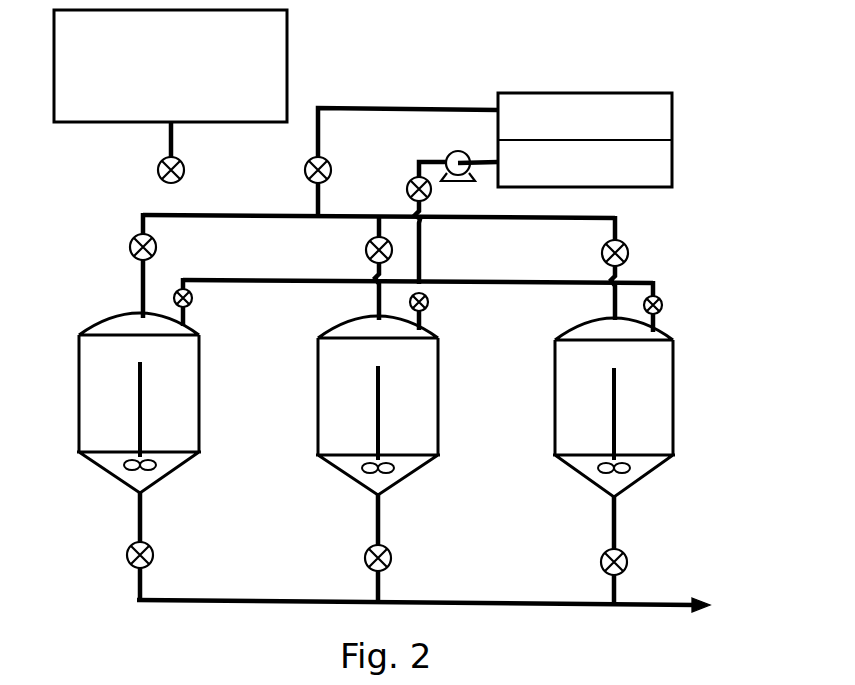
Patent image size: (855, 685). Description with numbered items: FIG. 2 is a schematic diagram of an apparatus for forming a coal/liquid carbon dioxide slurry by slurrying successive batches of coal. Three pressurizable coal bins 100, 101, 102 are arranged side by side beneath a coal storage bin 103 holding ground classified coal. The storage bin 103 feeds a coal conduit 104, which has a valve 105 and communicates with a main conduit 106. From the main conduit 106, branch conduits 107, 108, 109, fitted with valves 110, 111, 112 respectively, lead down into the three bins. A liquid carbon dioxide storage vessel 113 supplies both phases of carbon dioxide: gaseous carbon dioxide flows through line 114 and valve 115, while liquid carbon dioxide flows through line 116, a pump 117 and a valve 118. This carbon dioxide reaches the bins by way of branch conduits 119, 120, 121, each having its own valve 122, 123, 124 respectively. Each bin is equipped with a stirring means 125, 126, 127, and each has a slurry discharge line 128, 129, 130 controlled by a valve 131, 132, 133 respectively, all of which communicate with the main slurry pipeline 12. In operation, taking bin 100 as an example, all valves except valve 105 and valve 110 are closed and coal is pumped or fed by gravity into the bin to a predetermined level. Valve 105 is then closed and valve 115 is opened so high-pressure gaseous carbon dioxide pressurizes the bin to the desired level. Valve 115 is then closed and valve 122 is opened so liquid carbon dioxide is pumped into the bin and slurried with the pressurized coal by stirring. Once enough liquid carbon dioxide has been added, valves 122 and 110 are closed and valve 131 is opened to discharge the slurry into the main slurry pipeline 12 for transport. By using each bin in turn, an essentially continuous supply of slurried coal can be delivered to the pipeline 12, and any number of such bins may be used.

The main slurry pipeline 12 is at (450, 600).
The pressurizable coal bin 100 is at (92, 368).
The pressurizable coal bin 101 is at (334, 370).
The pressurizable coal bin 102 is at (570, 380).
The coal storage bin 103 is at (275, 37).
The coal conduit 104 is at (171, 139).
The valve 105 is at (158, 170).
The main conduit 106 is at (208, 214).
The branch conduit 107 is at (143, 226).
The branch conduit 108 is at (379, 229).
The branch conduit 109 is at (620, 224).
The valve 110 is at (130, 251).
The valve 111 is at (366, 253).
The valve 112 is at (630, 251).
The liquid carbon dioxide storage vessel 113 is at (657, 105).
The line 114 is at (345, 107).
The valve 115 is at (330, 166).
The line 116 is at (419, 157).
The pump 117 is at (459, 150).
The valve 118 is at (406, 187).
The branch conduit 119 is at (187, 317).
The branch conduit 120 is at (423, 320).
The branch conduit 121 is at (659, 319).
The valve 122 is at (193, 299).
The valve 123 is at (429, 303).
The valve 124 is at (661, 298).
The stirring means 125 is at (140, 404).
The stirring means 126 is at (378, 405).
The stirring means 127 is at (614, 405).
The slurry discharge line 128 is at (138, 522).
The slurry discharge line 129 is at (376, 523).
The slurry discharge line 130 is at (611, 525).
The valve 131 is at (127, 555).
The valve 132 is at (365, 558).
The valve 133 is at (601, 562).